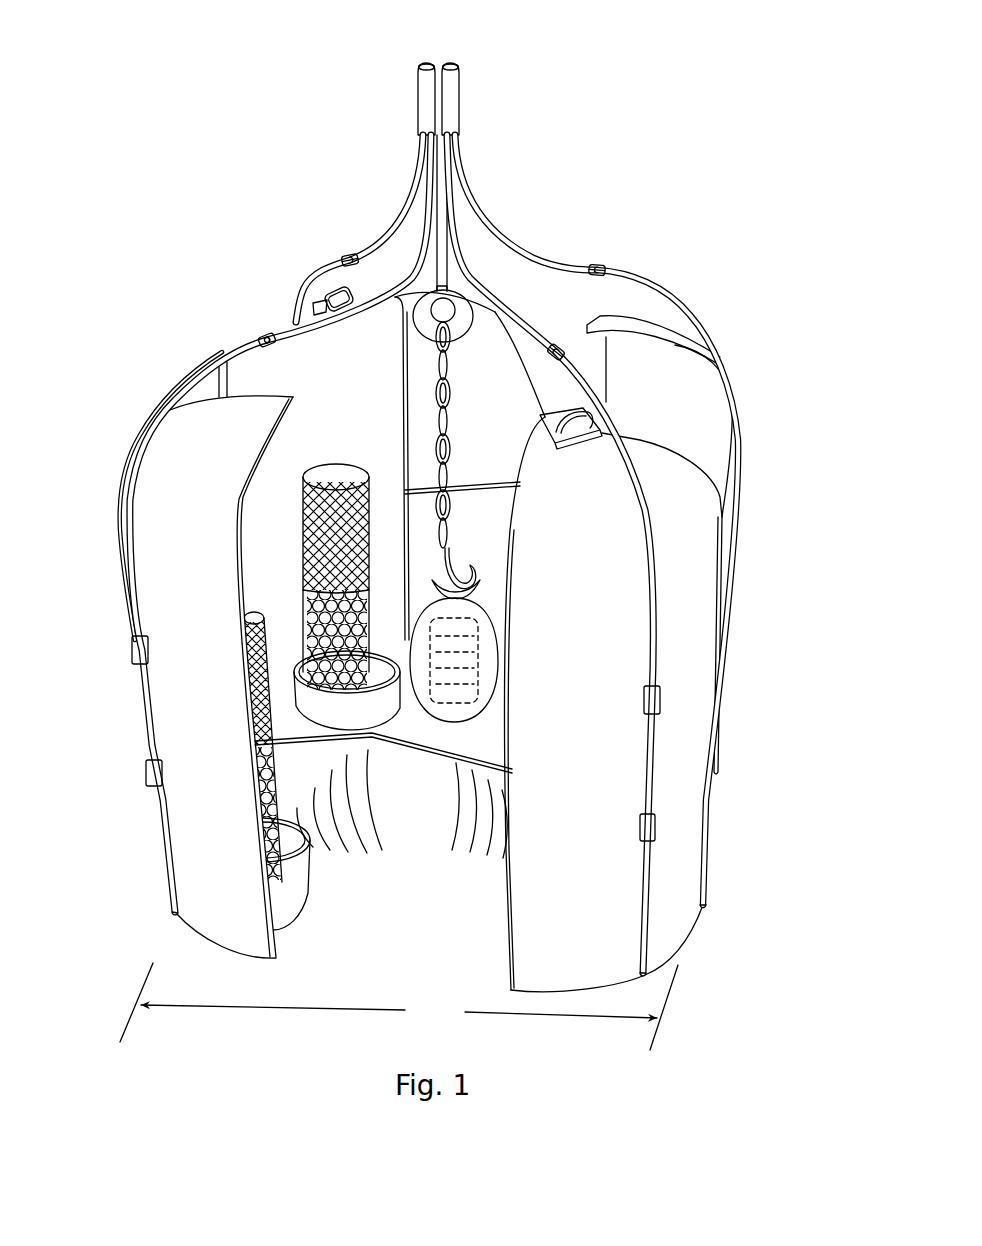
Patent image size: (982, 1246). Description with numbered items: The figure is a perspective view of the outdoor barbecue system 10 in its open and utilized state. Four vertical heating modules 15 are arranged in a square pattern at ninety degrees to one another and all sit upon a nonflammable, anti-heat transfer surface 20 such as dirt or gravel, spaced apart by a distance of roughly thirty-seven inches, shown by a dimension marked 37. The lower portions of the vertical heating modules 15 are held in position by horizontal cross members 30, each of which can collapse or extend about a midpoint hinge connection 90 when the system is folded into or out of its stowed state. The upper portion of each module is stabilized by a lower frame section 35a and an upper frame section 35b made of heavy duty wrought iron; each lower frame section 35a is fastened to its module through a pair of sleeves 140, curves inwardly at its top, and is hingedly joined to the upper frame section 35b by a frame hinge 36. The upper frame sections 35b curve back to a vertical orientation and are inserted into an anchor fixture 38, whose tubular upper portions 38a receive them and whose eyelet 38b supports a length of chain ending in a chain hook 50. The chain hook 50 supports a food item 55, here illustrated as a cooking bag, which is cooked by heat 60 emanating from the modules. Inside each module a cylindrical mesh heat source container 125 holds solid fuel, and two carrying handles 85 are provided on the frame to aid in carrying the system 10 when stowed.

The system 10 is at (113, 993).
The vertical heating module 15 is at (395, 297).
The nonflammable, anti-heat transfer surface 20 is at (412, 906).
The horizontal cross member 30 is at (411, 488).
The lower frame section 35a is at (236, 345).
The upper frame section 35b is at (493, 287).
The frame hinge 36 is at (267, 333).
The diameter d 37 is at (447, 1021).
The anchor fixture 38 is at (429, 156).
The hanger tube 38a is at (449, 96).
The eyelet 38b is at (441, 251).
The chain hook 50 is at (456, 582).
The food item 55 is at (438, 720).
The heat 60 is at (367, 852).
The carrying handle 85 is at (330, 288).
The midpoint hinge connection 90 is at (505, 482).
The heat source container 125 is at (300, 486).
The sleeve 140 is at (138, 650).